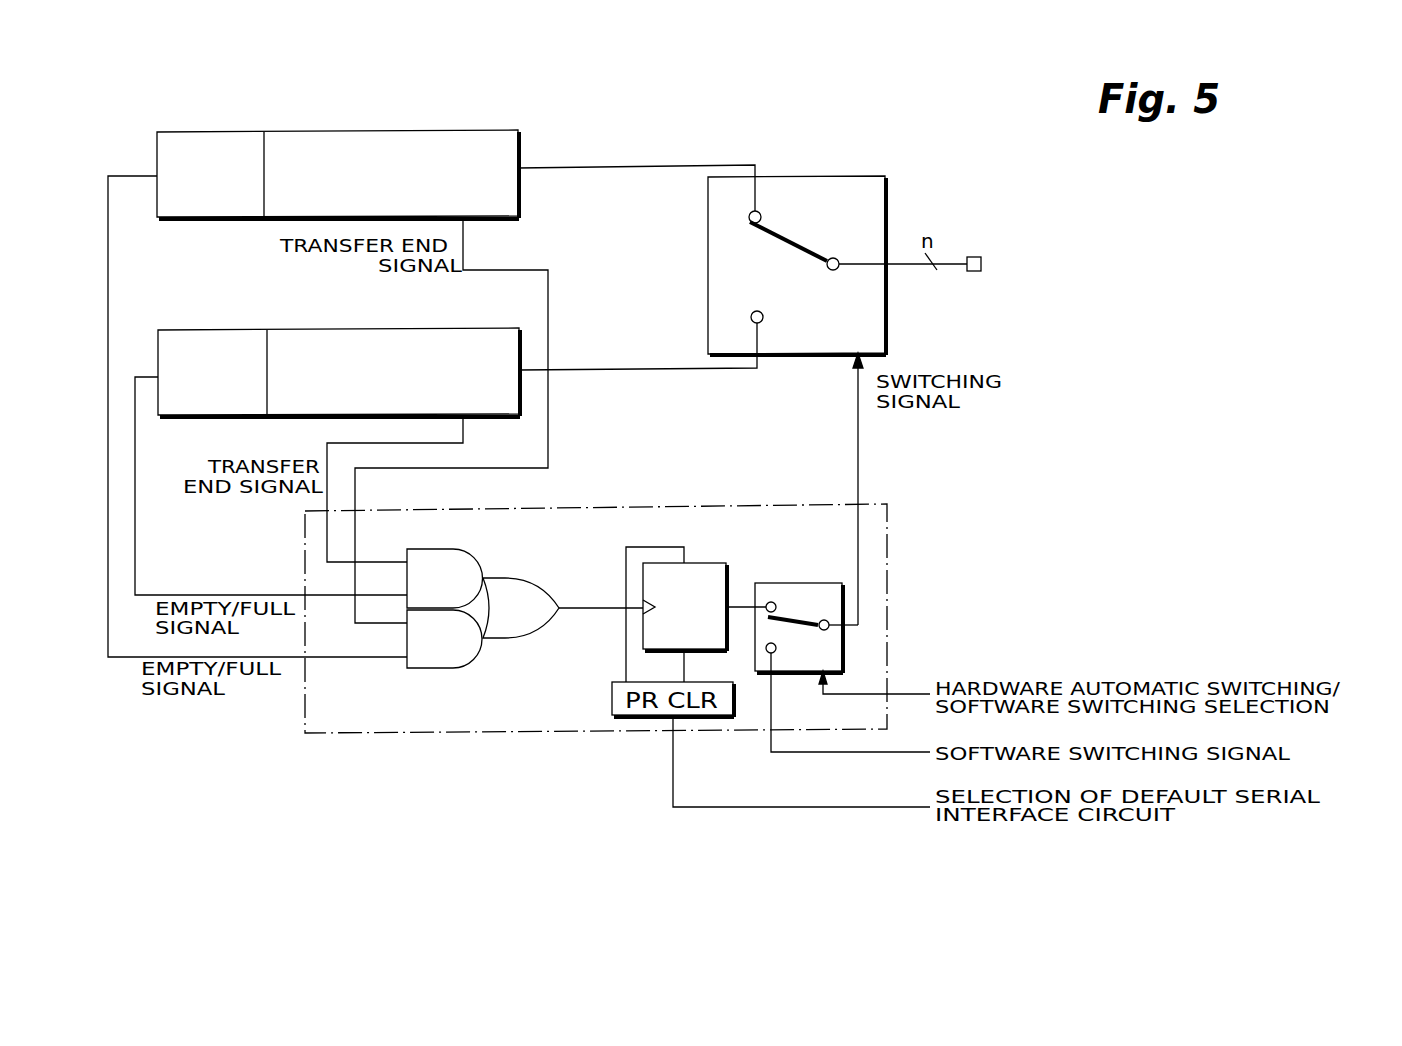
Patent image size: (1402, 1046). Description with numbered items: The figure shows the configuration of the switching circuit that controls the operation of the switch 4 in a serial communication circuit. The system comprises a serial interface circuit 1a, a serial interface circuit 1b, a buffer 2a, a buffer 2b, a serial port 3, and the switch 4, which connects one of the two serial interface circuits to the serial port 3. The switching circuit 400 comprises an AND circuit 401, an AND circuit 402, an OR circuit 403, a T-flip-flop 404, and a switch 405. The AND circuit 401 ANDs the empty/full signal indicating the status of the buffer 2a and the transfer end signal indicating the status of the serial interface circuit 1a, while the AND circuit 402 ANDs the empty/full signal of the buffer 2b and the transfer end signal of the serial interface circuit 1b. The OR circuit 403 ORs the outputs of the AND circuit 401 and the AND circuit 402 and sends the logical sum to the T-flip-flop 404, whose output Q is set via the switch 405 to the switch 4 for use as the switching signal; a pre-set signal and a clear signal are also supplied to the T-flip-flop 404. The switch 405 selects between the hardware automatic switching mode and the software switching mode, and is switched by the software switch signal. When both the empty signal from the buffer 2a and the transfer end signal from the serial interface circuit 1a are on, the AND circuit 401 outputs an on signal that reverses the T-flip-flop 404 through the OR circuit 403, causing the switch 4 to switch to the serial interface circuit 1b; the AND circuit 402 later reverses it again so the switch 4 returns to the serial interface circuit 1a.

The serial interface circuit 1a is at (448, 132).
The serial interface circuit 1b is at (447, 330).
The buffer 2a is at (215, 132).
The buffer 2b is at (212, 330).
The serial port 3 is at (985, 255).
The switch 4 is at (828, 177).
The switching circuit 400 is at (887, 540).
The AND circuit 401 is at (450, 668).
The AND circuit 402 is at (476, 557).
The OR circuit 403 is at (552, 590).
The T-flip-flop 404 is at (705, 563).
The switch 405 is at (845, 604).